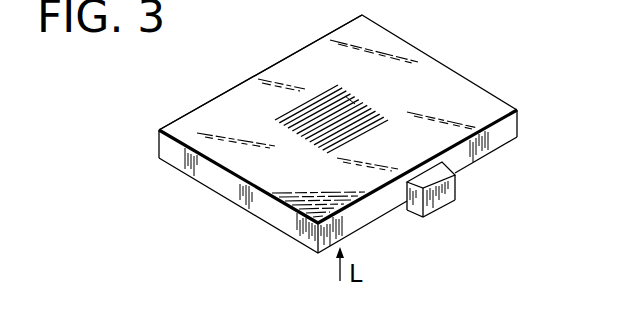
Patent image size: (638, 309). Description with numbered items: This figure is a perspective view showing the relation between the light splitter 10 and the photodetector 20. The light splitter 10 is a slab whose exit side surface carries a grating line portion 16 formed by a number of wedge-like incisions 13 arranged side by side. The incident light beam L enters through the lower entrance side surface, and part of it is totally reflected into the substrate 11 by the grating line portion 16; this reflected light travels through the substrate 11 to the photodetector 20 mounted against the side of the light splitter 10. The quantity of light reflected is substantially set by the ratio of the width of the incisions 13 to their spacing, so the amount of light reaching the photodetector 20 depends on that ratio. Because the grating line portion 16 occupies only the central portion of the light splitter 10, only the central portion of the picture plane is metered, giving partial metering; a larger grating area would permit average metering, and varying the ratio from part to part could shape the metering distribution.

The light splitter 10 is at (474, 74).
The substrate 11 is at (268, 70).
The wedge-like incisions 13 is at (296, 116).
The grating line portion 16 is at (349, 112).
The photodetector 20 is at (443, 198).